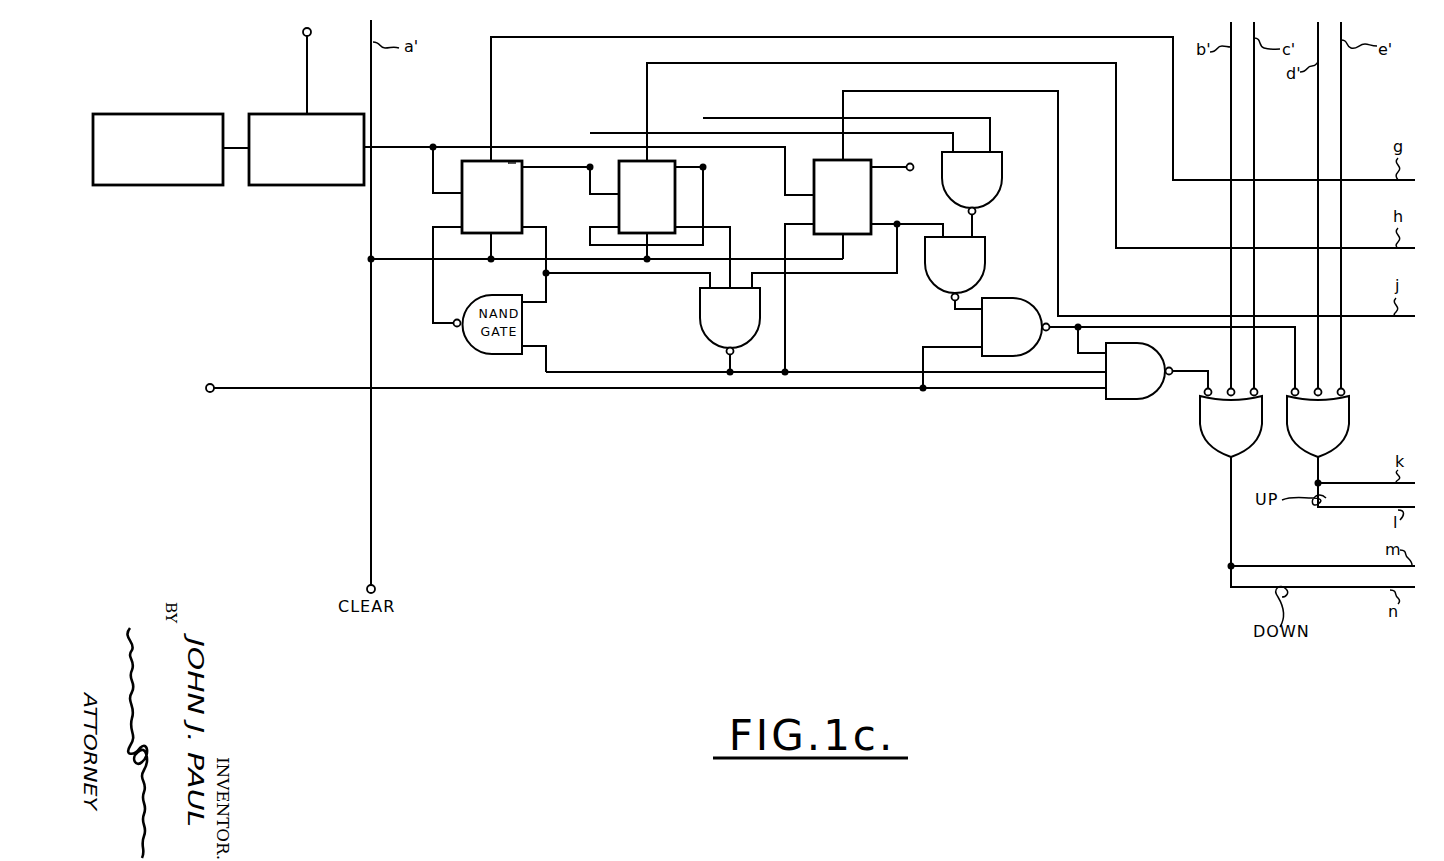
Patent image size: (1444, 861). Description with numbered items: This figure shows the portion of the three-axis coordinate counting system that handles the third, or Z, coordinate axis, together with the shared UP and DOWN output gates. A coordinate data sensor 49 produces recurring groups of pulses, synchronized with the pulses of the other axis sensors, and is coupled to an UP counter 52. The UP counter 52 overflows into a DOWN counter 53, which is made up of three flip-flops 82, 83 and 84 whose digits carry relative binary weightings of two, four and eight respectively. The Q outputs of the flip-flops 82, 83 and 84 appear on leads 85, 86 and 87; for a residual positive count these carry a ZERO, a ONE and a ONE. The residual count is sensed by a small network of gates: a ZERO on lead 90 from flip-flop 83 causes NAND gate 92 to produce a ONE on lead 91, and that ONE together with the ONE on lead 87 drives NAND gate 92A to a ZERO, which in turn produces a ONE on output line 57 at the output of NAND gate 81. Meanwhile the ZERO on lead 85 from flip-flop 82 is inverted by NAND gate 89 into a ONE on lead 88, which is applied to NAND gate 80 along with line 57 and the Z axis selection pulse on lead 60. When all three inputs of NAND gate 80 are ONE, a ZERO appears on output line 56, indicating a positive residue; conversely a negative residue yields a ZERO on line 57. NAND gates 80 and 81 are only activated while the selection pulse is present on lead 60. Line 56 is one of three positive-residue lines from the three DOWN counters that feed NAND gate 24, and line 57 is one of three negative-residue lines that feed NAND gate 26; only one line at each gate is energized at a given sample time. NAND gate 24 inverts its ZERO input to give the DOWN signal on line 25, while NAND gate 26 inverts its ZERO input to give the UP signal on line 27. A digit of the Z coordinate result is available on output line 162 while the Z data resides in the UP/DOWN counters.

The output line 162 is at (307, 70).
The coordinate data sensor 49 is at (156, 186).
The UP counter 52 is at (300, 186).
The flip-flop 82 is at (462, 213).
The flip-flop 83 is at (619, 213).
The flip-flop 84 is at (814, 210).
The lead 85 is at (530, 224).
The lead 86 is at (716, 222).
The lead 87 is at (890, 224).
The DOWN counter 53 is at (764, 174).
The NAND gate 89 is at (700, 316).
The lead 88 is at (864, 371).
The lead 90 is at (992, 120).
The NAND gate 92 is at (1003, 157).
The lead 91 is at (974, 227).
The NAND gate 92A is at (986, 244).
The NAND gate 81 is at (982, 332).
The NAND gate 80 is at (1118, 400).
The output line 56 is at (1184, 367).
The output line 57 is at (1298, 357).
The NAND gate 24 is at (1203, 430).
The NAND gate 26 is at (1344, 426).
The line 25 is at (1230, 539).
The line 27 is at (1340, 508).
The lead 60 is at (222, 394).